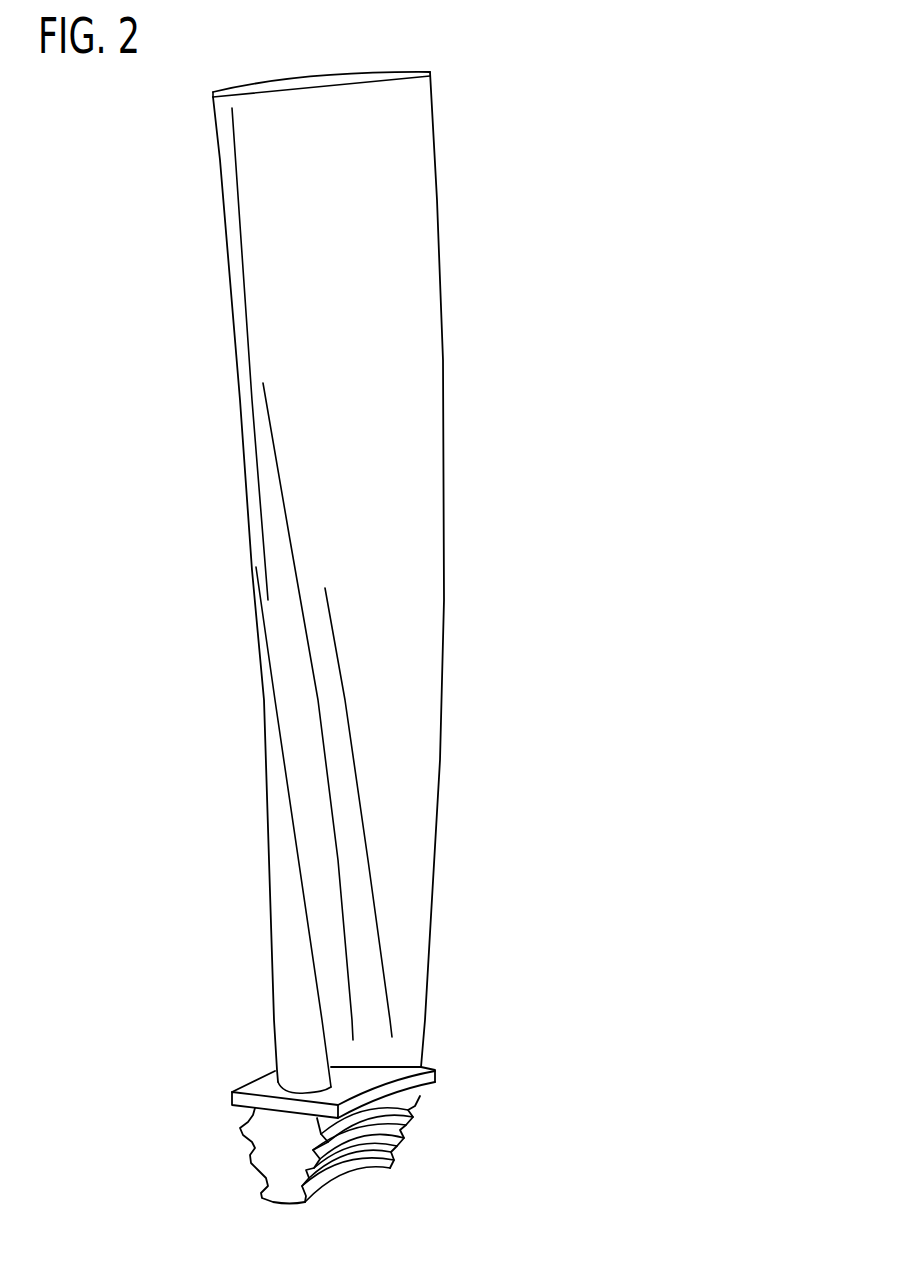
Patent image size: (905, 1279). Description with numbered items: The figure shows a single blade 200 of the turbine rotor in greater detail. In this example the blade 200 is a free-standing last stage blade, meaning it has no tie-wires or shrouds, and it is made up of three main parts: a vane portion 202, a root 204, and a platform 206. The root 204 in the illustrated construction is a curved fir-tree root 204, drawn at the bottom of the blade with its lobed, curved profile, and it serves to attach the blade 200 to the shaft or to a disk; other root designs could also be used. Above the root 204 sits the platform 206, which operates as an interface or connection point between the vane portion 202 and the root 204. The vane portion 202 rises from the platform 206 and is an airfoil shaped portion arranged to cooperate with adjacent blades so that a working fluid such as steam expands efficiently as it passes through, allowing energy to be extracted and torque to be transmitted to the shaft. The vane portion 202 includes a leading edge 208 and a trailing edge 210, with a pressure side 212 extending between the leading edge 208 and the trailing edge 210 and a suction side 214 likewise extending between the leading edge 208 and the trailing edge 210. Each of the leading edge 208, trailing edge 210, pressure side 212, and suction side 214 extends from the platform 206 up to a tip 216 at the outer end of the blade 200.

The blade 200 is at (500, 106).
The vane portion 202 is at (267, 178).
The root 204 is at (282, 1148).
The platform 206 is at (260, 1088).
The leading edge 208 is at (231, 334).
The trailing edge 210 is at (445, 378).
The pressure side 212 is at (385, 686).
The suction side 214 is at (292, 978).
The tip 216 is at (286, 77).